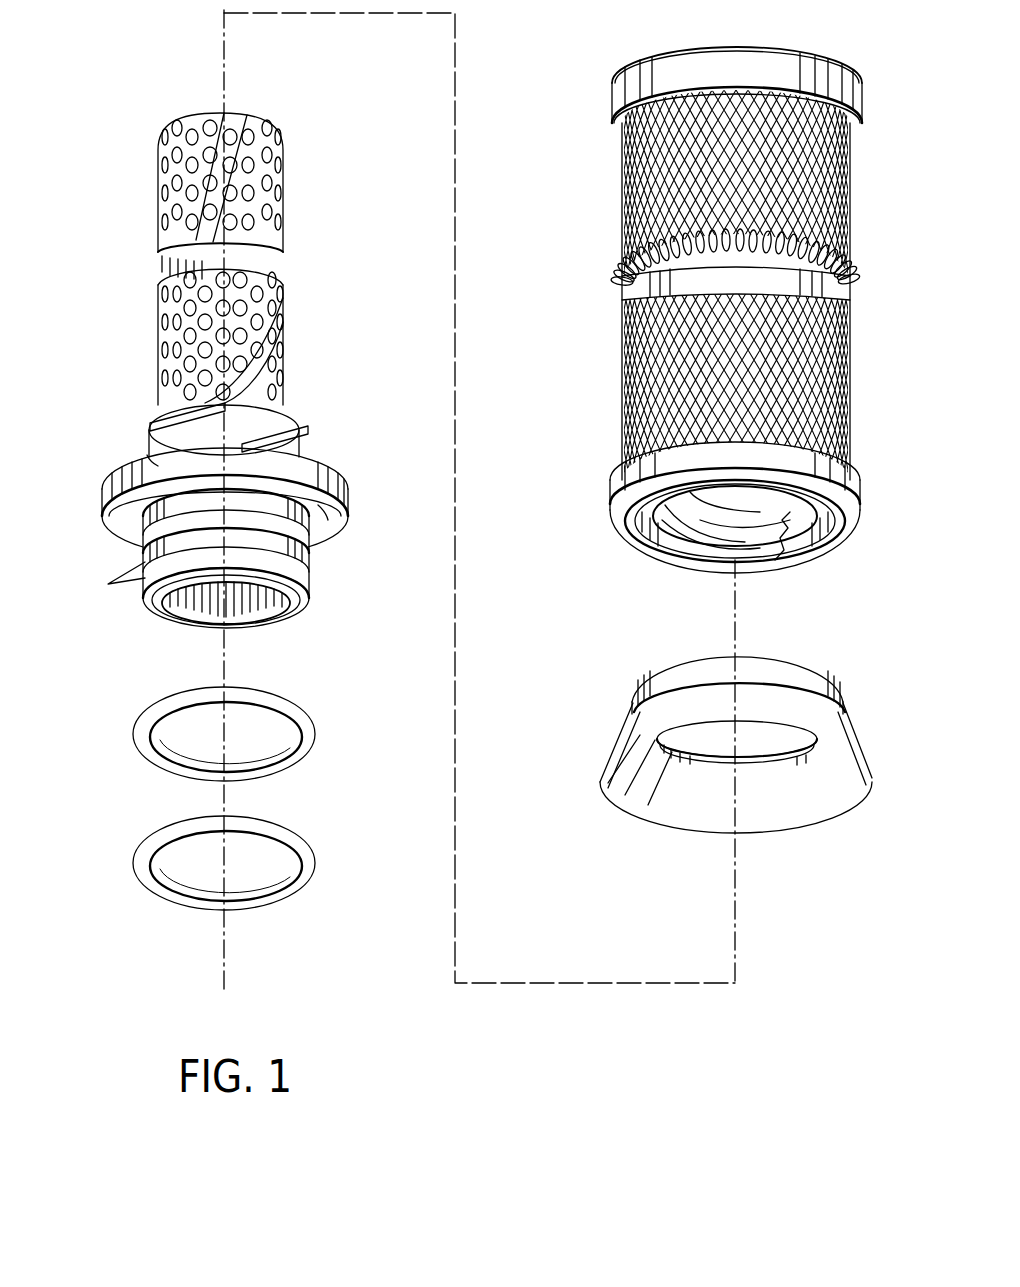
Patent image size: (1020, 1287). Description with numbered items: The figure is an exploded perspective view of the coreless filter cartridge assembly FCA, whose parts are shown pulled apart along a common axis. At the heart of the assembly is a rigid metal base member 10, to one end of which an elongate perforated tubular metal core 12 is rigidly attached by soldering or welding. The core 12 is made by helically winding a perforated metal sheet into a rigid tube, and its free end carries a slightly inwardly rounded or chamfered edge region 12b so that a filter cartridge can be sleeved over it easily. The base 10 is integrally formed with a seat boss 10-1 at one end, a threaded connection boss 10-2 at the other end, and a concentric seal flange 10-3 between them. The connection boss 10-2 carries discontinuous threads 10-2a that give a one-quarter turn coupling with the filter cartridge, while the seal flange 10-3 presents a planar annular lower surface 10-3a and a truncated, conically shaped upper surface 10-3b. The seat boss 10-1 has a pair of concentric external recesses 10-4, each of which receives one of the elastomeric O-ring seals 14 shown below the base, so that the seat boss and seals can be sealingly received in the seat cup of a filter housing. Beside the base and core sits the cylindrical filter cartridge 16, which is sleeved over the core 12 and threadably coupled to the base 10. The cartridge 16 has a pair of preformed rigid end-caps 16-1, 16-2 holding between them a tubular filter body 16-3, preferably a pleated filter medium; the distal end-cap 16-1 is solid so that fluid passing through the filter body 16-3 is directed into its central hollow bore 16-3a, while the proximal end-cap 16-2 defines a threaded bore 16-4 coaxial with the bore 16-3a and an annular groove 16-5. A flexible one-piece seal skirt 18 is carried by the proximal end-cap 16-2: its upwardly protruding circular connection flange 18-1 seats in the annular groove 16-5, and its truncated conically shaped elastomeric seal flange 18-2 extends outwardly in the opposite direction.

The filter cartridge assembly FCA is at (508, 70).
The base member 10 is at (229, 496).
The seat boss 10-1 is at (312, 558).
The threaded connection boss 10-2 is at (272, 423).
The discontinuous threads 10-2a is at (168, 432).
The seal flange 10-3 is at (118, 490).
The planar annular lower surface 10-3a is at (150, 462).
The truncated conically-shaped upper surface 10-3b is at (323, 511).
The external recesses 10-4 is at (111, 588).
The perforated tubular metal core 12 is at (274, 324).
The chamfered edge region 12b is at (282, 128).
The O-ring seals 14 is at (263, 698).
The filter cartridge 16 is at (721, 329).
The distal end-cap 16-1 is at (614, 104).
The proximal end-cap 16-2 is at (612, 496).
The filter body 16-3 is at (754, 178).
The central hollow bore 16-3a is at (764, 290).
The threaded bore 16-4 is at (757, 562).
The annular groove 16-5 is at (848, 528).
The seal skirt 18 is at (740, 730).
The connection flange 18-1 is at (677, 680).
The seal flange 18-2 is at (712, 807).